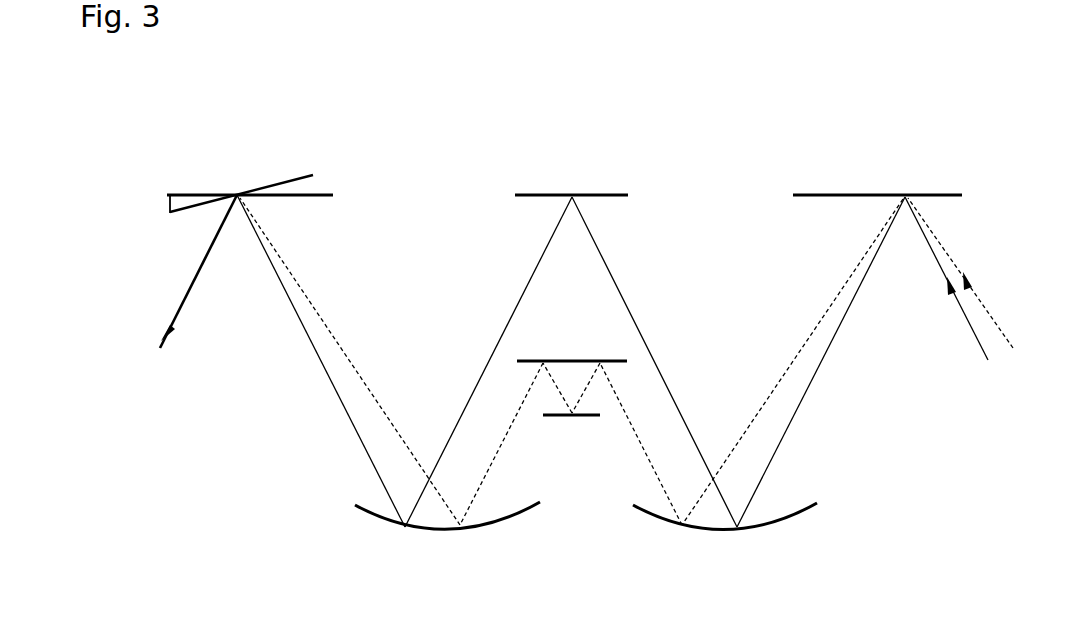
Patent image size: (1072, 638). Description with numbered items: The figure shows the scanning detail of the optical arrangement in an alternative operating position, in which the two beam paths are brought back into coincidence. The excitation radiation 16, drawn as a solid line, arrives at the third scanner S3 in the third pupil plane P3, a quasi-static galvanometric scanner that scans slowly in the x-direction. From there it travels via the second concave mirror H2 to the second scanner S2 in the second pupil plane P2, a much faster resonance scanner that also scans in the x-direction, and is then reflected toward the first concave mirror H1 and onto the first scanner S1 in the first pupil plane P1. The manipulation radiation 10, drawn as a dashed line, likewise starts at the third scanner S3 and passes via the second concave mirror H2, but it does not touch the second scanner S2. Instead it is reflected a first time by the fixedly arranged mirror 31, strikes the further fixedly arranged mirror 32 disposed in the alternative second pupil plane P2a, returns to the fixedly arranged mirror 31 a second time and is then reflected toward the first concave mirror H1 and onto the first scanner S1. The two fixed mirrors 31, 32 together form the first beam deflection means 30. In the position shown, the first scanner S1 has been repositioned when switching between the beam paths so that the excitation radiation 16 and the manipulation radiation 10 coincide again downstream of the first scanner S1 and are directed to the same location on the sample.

The manipulation radiation 10 is at (983, 302).
The excitation radiation 16 is at (973, 330).
The first scanner S1 is at (256, 156).
The first pupil plane P1 is at (318, 192).
The second scanner S2 is at (577, 157).
The second pupil plane P2 is at (610, 192).
The third scanner S3 is at (883, 157).
The third pupil plane P3 is at (942, 192).
The first beam deflection means 30 is at (536, 334).
The fixedly arranged mirror 31 is at (575, 360).
The further fixedly arranged mirror 32 is at (586, 453).
The alternative second pupil plane P2a is at (575, 418).
The first concave mirror H1 is at (512, 523).
The second concave mirror H2 is at (770, 527).